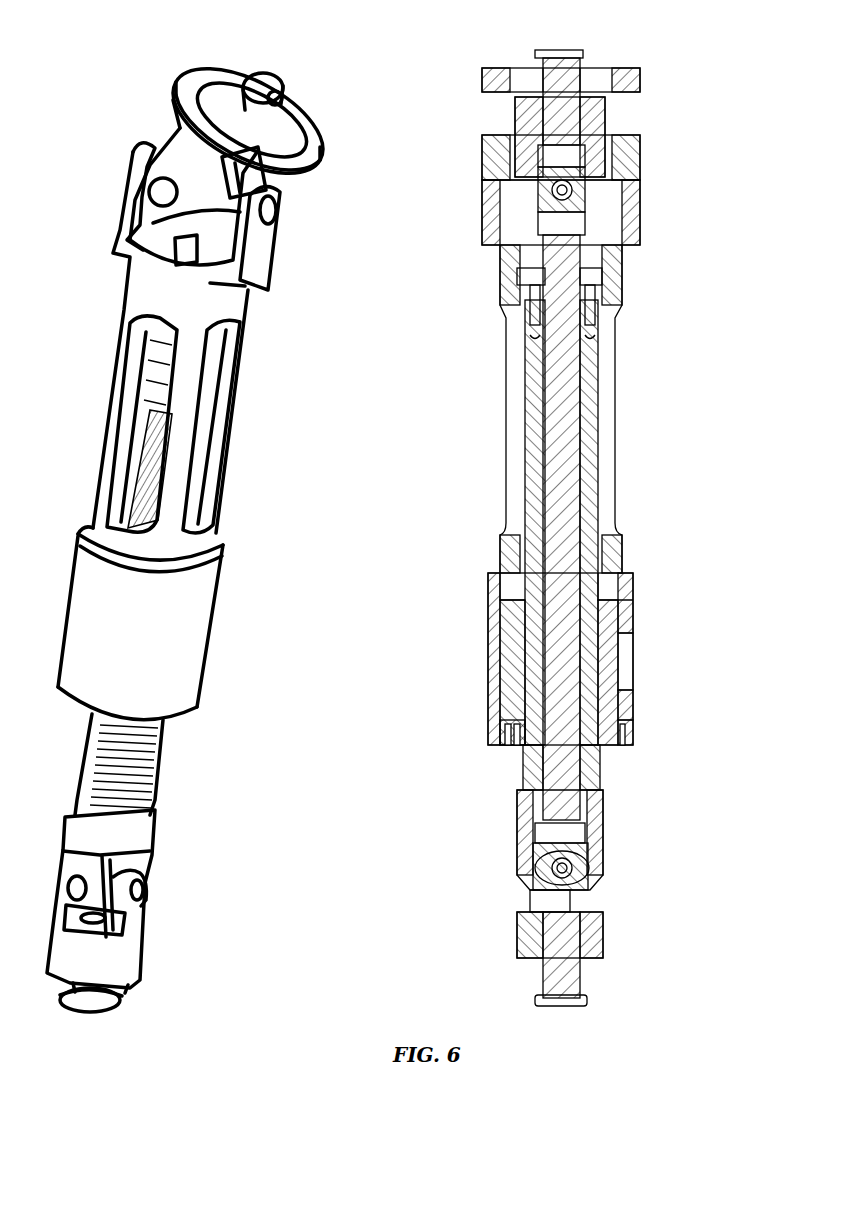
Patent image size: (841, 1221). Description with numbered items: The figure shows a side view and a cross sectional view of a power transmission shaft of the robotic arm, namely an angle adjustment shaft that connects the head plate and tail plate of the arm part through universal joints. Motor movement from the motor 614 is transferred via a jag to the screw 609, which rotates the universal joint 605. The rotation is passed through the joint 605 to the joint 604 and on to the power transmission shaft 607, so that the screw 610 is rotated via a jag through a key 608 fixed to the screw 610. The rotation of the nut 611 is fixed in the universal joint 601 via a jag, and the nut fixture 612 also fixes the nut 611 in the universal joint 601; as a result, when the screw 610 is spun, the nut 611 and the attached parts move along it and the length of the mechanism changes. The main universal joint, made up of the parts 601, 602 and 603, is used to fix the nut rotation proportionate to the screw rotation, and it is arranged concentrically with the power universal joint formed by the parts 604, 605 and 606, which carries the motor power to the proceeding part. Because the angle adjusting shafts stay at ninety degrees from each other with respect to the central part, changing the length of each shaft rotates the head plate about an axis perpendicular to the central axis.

The universal joint 601 is at (640, 238).
The main universal joint part 602 is at (640, 168).
The main universal joint part 603 is at (640, 83).
The joint 604 is at (538, 225).
The universal joint 605 is at (598, 128).
The power universal joint part 606 is at (578, 890).
The power transmission shaft 607 is at (600, 290).
The key 608 is at (596, 312).
The screw 609 is at (585, 52).
The screw 610 is at (600, 430).
The nut 611 is at (616, 613).
The nut fixture 612 is at (620, 735).
The motor 614 is at (566, 192).